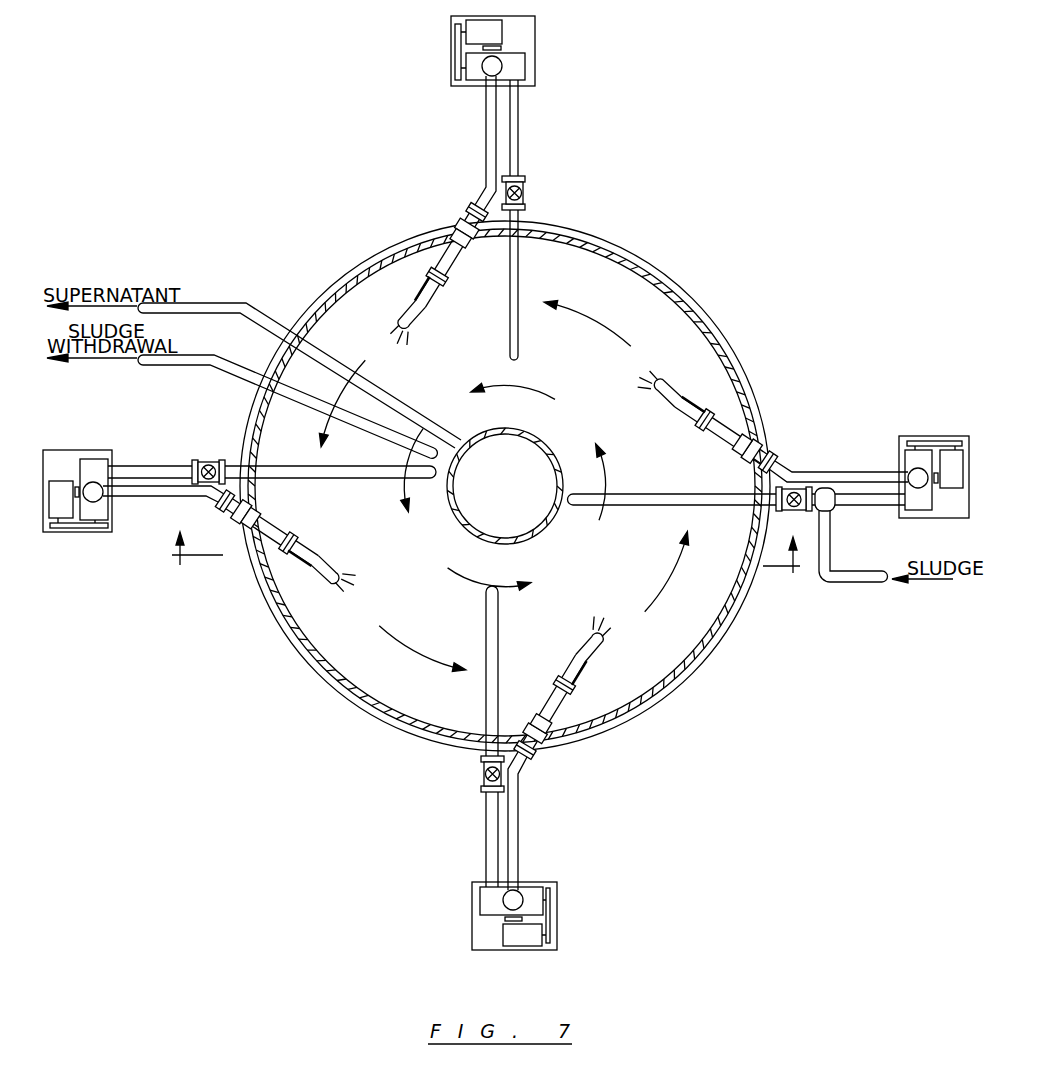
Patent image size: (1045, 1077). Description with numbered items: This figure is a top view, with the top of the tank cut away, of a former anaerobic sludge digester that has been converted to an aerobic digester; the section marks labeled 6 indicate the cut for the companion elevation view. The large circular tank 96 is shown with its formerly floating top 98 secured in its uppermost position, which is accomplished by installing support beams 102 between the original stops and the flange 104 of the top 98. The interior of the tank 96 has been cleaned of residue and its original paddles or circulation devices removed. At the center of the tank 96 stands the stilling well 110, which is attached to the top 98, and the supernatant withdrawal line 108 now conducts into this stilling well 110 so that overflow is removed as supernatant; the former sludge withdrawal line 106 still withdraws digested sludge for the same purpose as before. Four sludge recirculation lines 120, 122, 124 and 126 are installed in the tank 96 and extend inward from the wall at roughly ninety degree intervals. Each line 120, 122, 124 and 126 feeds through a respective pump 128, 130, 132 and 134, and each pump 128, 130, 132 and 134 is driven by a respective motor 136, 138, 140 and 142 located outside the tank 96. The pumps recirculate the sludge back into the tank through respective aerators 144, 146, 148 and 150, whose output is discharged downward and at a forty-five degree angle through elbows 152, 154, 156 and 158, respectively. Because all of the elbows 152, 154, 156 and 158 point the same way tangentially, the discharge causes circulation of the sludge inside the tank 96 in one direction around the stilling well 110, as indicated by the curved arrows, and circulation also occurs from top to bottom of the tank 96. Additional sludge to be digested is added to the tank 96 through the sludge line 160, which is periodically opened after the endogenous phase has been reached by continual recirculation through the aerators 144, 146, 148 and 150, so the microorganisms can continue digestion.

The section line 6- 6 is at (486, 540).
The tank 96 is at (682, 683).
The top 98 is at (717, 637).
The support beams 102 is at (732, 592).
The flange 104 is at (668, 672).
The sludge withdrawal line 106 is at (225, 358).
The supernatant withdrawal line 108 is at (231, 303).
The stilling well 110 is at (507, 535).
The sludge recirculation line 120 is at (665, 494).
The sludge recirculation line 122 is at (519, 340).
The sludge recirculation line 124 is at (358, 466).
The sludge recirculation line 126 is at (486, 620).
The pump 128 is at (918, 511).
The pump 130 is at (522, 67).
The pump 132 is at (108, 512).
The pump 134 is at (532, 887).
The motor 136 is at (962, 450).
The motor 138 is at (465, 25).
The motor 140 is at (56, 519).
The motor 142 is at (522, 948).
The aerator 144 is at (722, 440).
The aerator 146 is at (458, 252).
The aerator 148 is at (265, 517).
The aerator 150 is at (552, 703).
The elbow 152 is at (670, 404).
The elbow 154 is at (426, 306).
The elbow 156 is at (327, 559).
The elbow 158 is at (577, 662).
The sludge line 160 is at (862, 584).